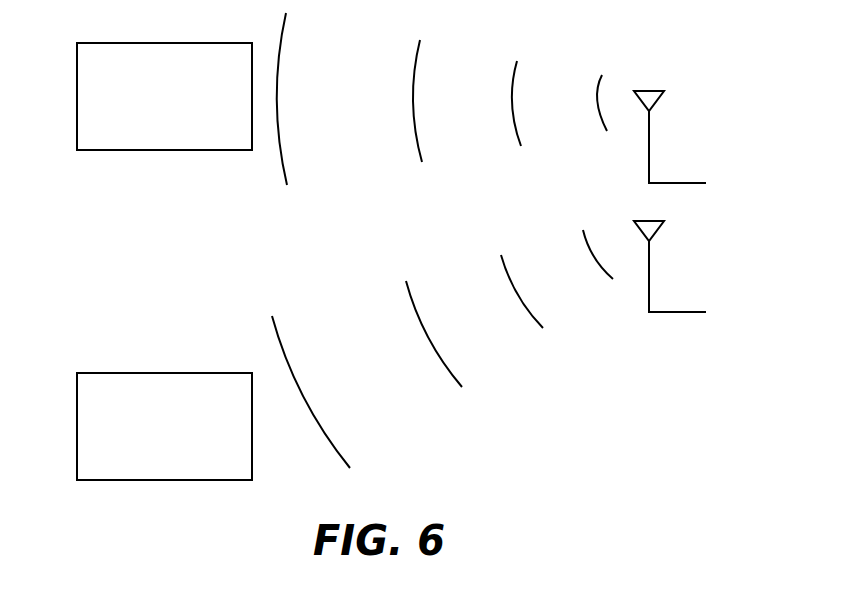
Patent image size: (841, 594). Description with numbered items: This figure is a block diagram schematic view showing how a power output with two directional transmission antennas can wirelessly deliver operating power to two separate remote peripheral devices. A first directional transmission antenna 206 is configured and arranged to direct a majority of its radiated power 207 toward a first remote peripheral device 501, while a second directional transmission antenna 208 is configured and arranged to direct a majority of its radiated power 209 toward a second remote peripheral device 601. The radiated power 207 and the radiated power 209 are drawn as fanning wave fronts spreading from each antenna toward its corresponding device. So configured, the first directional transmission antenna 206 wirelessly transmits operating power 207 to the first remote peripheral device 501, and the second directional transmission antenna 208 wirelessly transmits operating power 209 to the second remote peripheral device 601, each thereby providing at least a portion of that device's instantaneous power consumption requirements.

The first remote peripheral device 501 is at (108, 43).
The second remote peripheral device 601 is at (107, 373).
The radiated power 207 is at (415, 55).
The radiated power 209 is at (453, 377).
The first directional transmission antenna 206 is at (650, 135).
The second directional transmission antenna 208 is at (650, 265).